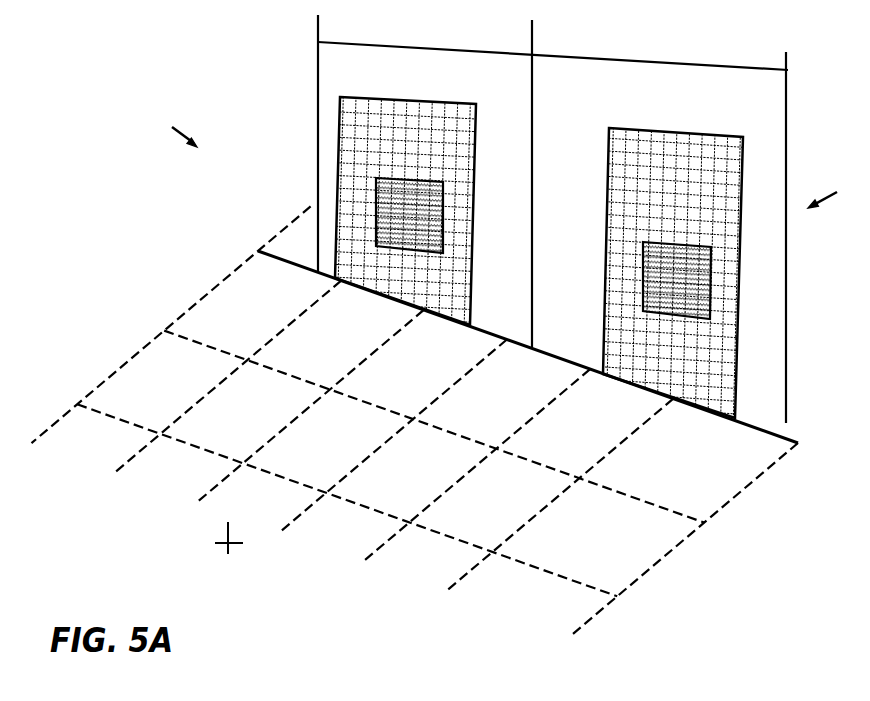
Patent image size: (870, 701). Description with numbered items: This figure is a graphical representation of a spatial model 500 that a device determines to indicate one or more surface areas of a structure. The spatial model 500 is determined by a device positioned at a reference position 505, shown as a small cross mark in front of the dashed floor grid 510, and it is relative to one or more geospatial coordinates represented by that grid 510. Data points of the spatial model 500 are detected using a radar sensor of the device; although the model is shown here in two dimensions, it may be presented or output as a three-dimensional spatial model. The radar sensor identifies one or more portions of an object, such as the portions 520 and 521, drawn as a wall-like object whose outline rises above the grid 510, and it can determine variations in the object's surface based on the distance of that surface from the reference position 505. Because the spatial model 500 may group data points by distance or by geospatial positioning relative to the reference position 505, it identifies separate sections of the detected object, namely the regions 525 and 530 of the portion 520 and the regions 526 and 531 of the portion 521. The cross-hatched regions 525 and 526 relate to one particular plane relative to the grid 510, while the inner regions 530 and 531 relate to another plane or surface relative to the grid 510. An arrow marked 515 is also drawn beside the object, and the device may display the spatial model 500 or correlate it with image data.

The spatial model 500 is at (176, 127).
The reference position 505 is at (222, 545).
The grid 510 is at (108, 372).
The viewing direction indicator 515 is at (828, 191).
The portion 520 is at (780, 107).
The portion 521 is at (425, 50).
The region 525 is at (682, 141).
The region 526 is at (428, 108).
The region 530 is at (710, 287).
The region 531 is at (418, 222).